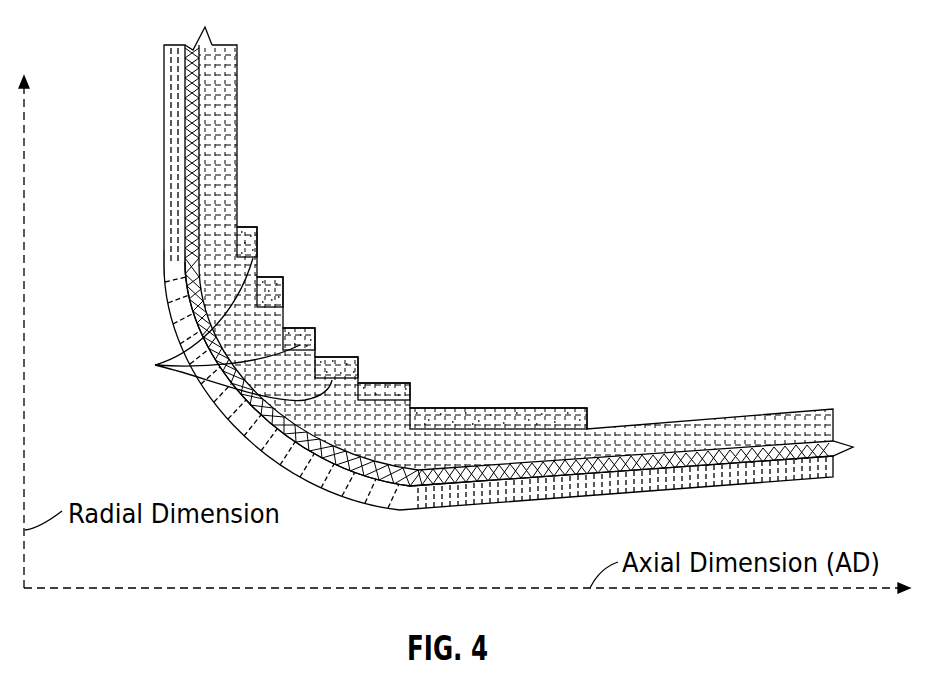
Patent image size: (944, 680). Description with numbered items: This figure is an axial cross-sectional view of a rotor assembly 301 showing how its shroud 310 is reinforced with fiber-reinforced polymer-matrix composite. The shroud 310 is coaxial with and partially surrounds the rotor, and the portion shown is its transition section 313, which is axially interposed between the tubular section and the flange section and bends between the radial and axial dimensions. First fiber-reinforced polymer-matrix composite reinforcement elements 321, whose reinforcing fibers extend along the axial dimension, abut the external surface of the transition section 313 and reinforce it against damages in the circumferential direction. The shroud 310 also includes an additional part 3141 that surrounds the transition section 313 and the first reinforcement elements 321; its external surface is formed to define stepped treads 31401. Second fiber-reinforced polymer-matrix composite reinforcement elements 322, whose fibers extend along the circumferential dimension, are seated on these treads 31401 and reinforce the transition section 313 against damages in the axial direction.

The rotor assembly 301 is at (466, 259).
The transition section 313 is at (176, 172).
The first fiber-reinforced polymer-matrix composite reinforcement elements 321 is at (198, 150).
The additional part 3141 is at (232, 83).
The second fiber-reinforced polymer-matrix composite reinforcement elements 322 is at (297, 337).
The treads 31401 is at (206, 329).
The shroud 310 is at (186, 261).